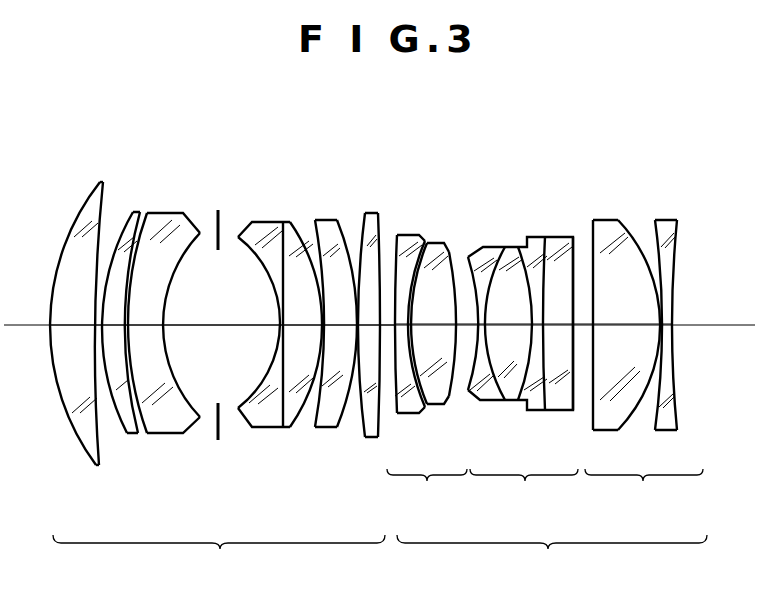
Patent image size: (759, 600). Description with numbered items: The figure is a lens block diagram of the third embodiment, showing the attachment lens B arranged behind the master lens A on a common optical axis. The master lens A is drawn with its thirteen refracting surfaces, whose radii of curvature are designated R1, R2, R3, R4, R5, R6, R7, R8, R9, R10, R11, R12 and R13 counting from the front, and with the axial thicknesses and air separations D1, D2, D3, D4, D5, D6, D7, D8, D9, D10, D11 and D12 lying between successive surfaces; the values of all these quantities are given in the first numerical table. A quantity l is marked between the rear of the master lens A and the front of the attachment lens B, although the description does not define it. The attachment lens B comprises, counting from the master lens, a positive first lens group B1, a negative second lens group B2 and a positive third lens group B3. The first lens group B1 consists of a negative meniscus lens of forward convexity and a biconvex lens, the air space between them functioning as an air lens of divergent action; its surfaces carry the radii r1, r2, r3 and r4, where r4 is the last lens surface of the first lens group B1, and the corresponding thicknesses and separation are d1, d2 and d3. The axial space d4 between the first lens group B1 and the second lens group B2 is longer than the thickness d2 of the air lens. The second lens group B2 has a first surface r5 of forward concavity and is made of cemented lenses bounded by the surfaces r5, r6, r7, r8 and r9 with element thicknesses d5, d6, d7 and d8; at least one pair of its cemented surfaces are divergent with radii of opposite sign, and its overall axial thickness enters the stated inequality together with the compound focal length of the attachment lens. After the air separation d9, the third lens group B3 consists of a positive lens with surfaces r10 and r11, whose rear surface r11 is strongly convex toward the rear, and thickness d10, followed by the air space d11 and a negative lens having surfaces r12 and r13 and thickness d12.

The radius of curvature R1 is at (78, 440).
The radius of curvature R2 is at (99, 466).
The radius of curvature R3 is at (127, 434).
The radius of curvature R4 is at (138, 434).
The radius of curvature R5 is at (150, 434).
The radius of curvature R6 is at (192, 432).
The radius of curvature R7 is at (240, 409).
The radius of curvature R8 is at (283, 428).
The radius of curvature R9 is at (290, 428).
The radius of curvature R10 is at (316, 428).
The radius of curvature R11 is at (337, 428).
The radius of curvature R12 is at (366, 438).
The radius of curvature R13 is at (378, 438).
The axial thickness D1 is at (77, 323).
The air separation D2 is at (95, 318).
The axial thickness D3 is at (114, 323).
The air separation D4 is at (130, 317).
The axial thickness D5 is at (147, 323).
The air separation D6 is at (214, 323).
The axial thickness D7 is at (281, 322).
The axial thickness D8 is at (305, 323).
The air separation D9 is at (322, 306).
The axial thickness D10 is at (343, 323).
The air separation D11 is at (356, 300).
The axial thickness D12 is at (365, 244).
The air space between front and rear lens groups l is at (385, 322).
The radius of curvature r1 is at (397, 414).
The radius of curvature r2 is at (419, 413).
The radius of curvature r3 is at (427, 405).
The radius of curvature of the last lens surface of the first lens group r4 is at (447, 401).
The radius of curvature of the first lens surface in the second lens group r5 is at (469, 391).
The radius of curvature r6 is at (505, 401).
The radius of curvature r7 is at (518, 401).
The radius of curvature r8 is at (545, 411).
The radius of curvature r9 is at (573, 411).
The radius of curvature r10 is at (594, 431).
The radius of curvature r11 is at (618, 431).
The radius of curvature r12 is at (655, 431).
The radius of curvature r13 is at (677, 431).
The axial thickness d1 is at (405, 243).
The air separation d2 is at (418, 258).
The axial thickness d3 is at (433, 323).
The axial separation d4 is at (466, 323).
The axial thickness d5 is at (483, 260).
The axial thickness d6 is at (509, 323).
The axial thickness d7 is at (540, 300).
The axial thickness d8 is at (556, 323).
The axial separation d9 is at (592, 300).
The axial thickness d10 is at (618, 323).
The air separation d11 is at (659, 318).
The axial thickness d12 is at (673, 320).
The master lens A is at (219, 557).
The attachment lens B is at (552, 558).
The positive first lens group B1 is at (427, 491).
The negative second lens group B2 is at (524, 491).
The positive third lens group B3 is at (644, 491).